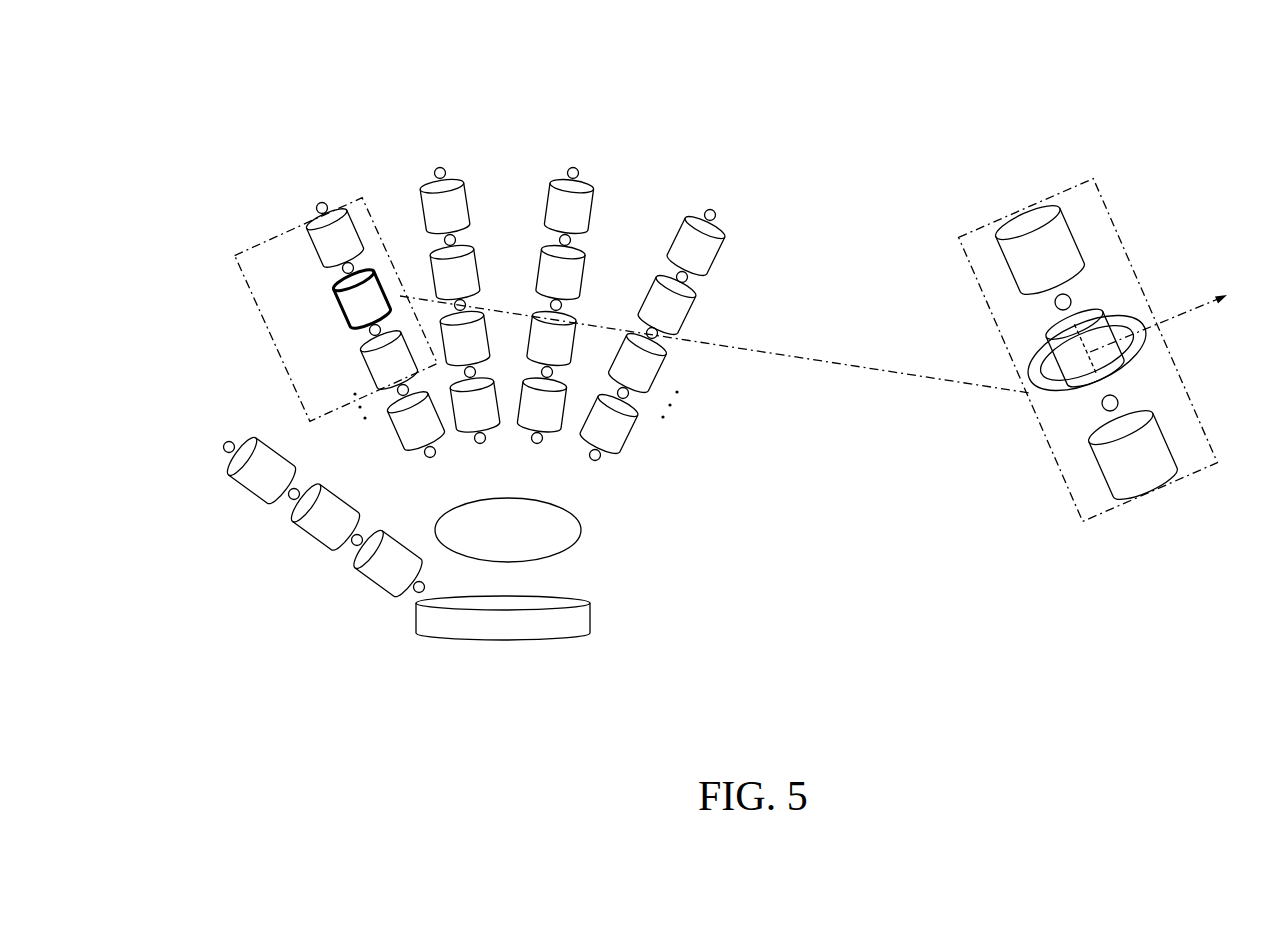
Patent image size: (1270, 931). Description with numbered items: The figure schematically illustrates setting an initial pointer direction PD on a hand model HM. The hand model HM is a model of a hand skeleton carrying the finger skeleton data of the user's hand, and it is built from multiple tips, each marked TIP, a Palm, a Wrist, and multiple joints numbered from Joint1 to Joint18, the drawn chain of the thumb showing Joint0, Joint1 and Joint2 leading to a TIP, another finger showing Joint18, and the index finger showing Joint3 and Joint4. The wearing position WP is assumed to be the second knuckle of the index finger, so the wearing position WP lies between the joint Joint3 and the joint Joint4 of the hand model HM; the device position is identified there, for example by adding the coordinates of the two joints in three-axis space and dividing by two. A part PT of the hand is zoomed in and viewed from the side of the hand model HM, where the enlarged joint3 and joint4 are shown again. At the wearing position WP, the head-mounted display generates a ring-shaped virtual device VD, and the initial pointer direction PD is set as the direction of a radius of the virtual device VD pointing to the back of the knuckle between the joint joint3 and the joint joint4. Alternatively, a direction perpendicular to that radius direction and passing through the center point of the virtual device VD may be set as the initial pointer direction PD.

The hand model HM is at (180, 83).
The part of the hand PT is at (283, 232).
The tip TIP is at (465, 291).
The wearing position WP is at (330, 308).
The joint Joint3 is at (310, 278).
The joint Joint4 is at (335, 341).
The joint Joint18 is at (724, 290).
The joint Joint2 is at (256, 513).
The joint Joint1 is at (320, 560).
The thumb joint 0 Joint0 is at (381, 604).
The palm Palm is at (547, 530).
The wrist Wrist is at (539, 618).
The joint joint3 is at (993, 312).
The joint joint4 is at (1044, 422).
The virtual device VD is at (1137, 329).
The initial pointer direction PD is at (1178, 316).